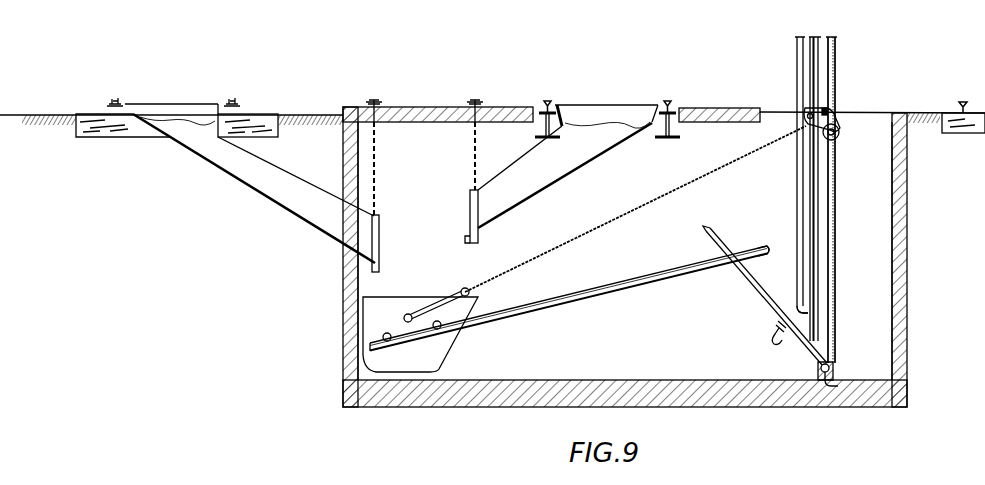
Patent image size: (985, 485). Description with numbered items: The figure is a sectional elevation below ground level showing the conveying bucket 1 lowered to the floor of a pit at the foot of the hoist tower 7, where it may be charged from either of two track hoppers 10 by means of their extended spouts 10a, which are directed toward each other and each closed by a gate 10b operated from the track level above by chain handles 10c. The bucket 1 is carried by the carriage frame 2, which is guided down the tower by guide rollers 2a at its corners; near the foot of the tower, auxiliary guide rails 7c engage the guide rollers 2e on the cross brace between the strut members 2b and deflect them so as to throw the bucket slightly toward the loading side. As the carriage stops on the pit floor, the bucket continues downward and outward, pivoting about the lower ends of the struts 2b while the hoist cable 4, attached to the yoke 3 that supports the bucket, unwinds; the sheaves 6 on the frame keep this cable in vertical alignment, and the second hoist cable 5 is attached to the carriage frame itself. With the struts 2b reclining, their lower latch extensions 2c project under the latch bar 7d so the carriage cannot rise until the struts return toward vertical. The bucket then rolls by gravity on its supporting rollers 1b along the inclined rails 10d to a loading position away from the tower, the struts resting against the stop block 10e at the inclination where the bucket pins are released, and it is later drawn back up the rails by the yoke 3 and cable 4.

The conveying bucket 1 is at (848, 283).
The conveying bucket supporting rollers 1b is at (388, 333).
The carriage frame 2 is at (836, 234).
The guide rollers of frame 2a is at (838, 109).
The strut members 2b is at (758, 295).
The latch at base of strut member 2c is at (836, 384).
The guide rollers of brace 2e is at (780, 336).
The yoke 3 is at (460, 289).
The hoist cable 4 is at (658, 201).
The hoist cable attached to carriage frame 5 is at (838, 65).
The sheaves 6 is at (805, 110).
The hoist tower 7 is at (836, 43).
The auxiliary guide rails 7c is at (805, 215).
The latch bar 7d is at (833, 369).
The track hoppers 10 is at (200, 84).
The spouts 10a is at (290, 211).
The gates 10b is at (471, 222).
The chain handles 10c is at (473, 150).
The inclined rails 10d is at (612, 285).
The stop block 10e is at (711, 268).